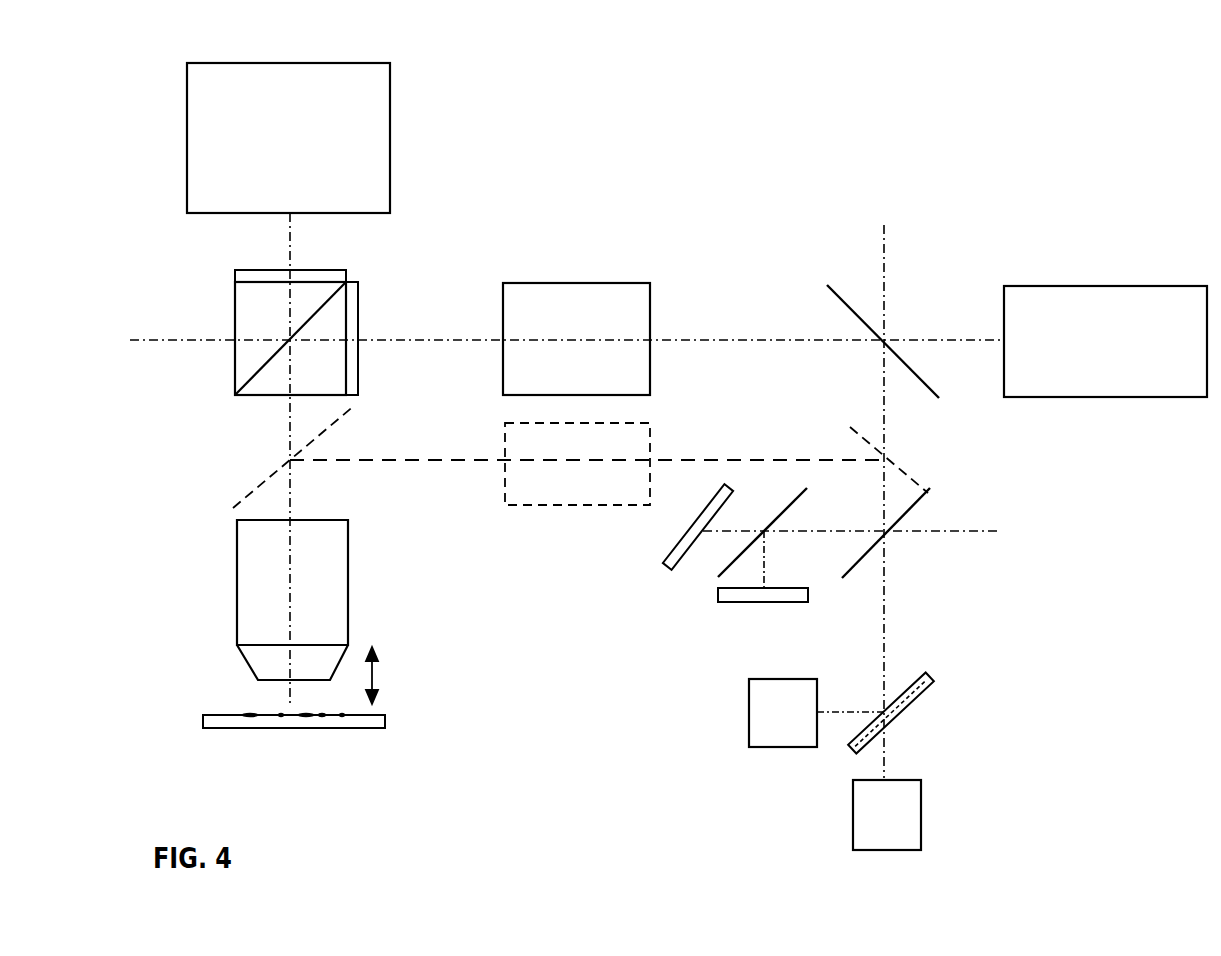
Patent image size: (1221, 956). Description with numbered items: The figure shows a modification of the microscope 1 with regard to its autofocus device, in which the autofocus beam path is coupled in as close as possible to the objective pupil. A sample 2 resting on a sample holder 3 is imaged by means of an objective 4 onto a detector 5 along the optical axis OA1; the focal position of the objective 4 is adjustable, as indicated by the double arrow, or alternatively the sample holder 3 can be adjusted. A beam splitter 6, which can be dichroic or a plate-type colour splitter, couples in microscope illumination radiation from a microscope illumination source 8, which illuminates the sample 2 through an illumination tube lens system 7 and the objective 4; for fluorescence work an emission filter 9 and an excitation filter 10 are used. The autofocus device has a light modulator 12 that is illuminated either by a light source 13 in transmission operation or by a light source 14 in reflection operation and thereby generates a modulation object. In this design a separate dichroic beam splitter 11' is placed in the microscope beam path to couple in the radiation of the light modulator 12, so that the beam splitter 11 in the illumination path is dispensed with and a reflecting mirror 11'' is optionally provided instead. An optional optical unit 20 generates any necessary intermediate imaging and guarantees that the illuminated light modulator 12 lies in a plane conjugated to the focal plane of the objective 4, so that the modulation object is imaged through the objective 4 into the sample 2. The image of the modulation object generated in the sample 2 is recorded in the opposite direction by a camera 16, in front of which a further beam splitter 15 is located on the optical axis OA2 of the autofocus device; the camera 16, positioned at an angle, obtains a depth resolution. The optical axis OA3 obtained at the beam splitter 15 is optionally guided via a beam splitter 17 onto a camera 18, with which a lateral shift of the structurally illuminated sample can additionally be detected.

The microscope 1 is at (505, 137).
The sample 2 is at (245, 712).
The sample holder 3 is at (203, 722).
The objective 4 is at (348, 548).
The detector 5 is at (340, 63).
The beam splitter 6 is at (235, 325).
The illumination tube lens system 7 is at (553, 283).
The microscope illumination source 8 is at (1045, 285).
The emission filter 9 is at (318, 270).
The excitation filter 10 is at (358, 312).
The beam splitter 11 is at (852, 341).
The dichroic beam splitter 11' is at (257, 456).
The reflecting mirror 11'' is at (852, 438).
The light modulator 12 is at (905, 722).
The light source 13 is at (855, 837).
The light source 14 is at (775, 749).
The beam splitter 15 is at (905, 518).
The camera 16 is at (718, 604).
The beam splitter 17 is at (795, 505).
The camera 18 is at (668, 551).
The optical unit 20 is at (510, 505).
The optical axis OA1 is at (297, 476).
The optical axis OA2 is at (888, 420).
The optical axis OA3 is at (826, 542).